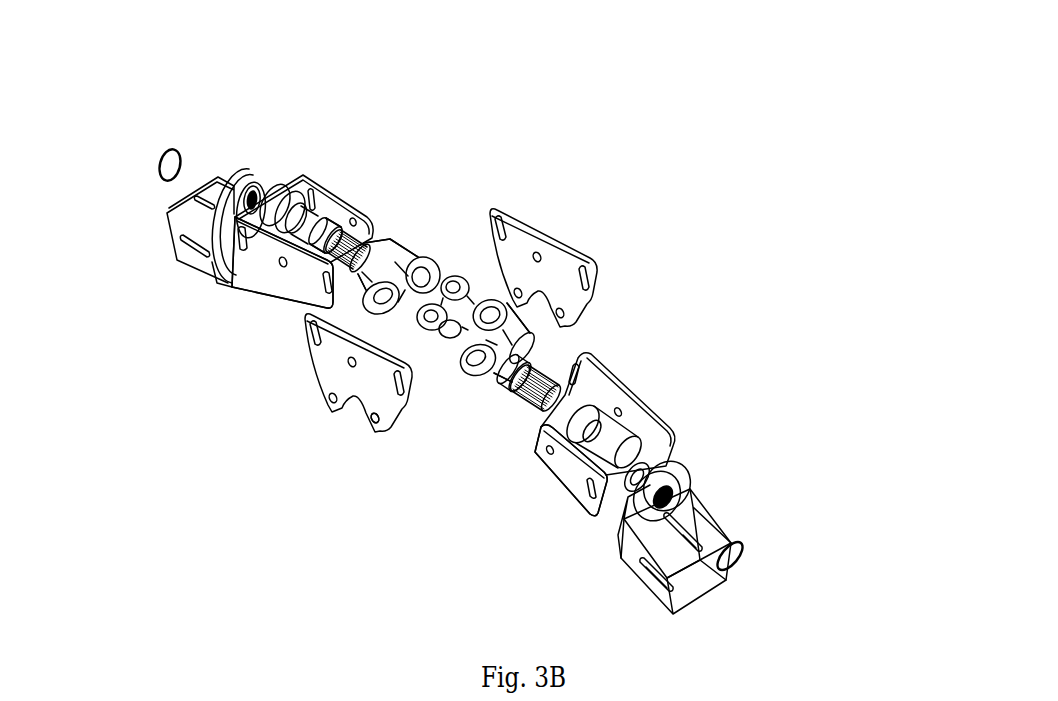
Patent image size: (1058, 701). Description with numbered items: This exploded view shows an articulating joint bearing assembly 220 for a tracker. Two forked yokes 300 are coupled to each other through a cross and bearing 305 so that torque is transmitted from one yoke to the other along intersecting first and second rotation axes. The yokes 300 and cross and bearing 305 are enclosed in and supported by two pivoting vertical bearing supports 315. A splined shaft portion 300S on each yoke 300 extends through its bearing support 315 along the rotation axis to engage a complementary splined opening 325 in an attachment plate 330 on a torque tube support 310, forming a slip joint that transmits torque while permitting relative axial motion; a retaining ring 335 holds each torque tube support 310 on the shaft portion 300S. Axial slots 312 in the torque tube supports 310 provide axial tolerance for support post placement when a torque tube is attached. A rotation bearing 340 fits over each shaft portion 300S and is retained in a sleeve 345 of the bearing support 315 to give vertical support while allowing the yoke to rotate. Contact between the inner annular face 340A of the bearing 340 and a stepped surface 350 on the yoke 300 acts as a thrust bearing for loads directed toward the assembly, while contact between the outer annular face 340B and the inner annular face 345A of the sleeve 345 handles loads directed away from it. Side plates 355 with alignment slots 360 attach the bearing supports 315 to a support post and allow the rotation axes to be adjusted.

The articulating joint bearing assembly 220 is at (690, 245).
The forked yoke 300 is at (388, 258).
The splined shaft portion 300S is at (344, 250).
The cross and bearing 305 is at (460, 275).
The torque tube support 310 is at (187, 267).
The axial slot 312 is at (660, 583).
The pivoting vertical bearing support 315 is at (657, 404).
The splined opening 325 is at (262, 195).
The attachment plate 330 is at (240, 163).
The retaining ring 335 is at (152, 166).
The rotation bearing 340 is at (297, 252).
The inner annular face 340A is at (305, 242).
The outer annular face 340B is at (443, 540).
The sleeve 345 is at (318, 200).
The inner annular face of sleeve 345A is at (285, 215).
The stepped surface 350 is at (507, 380).
The side plate 355 is at (550, 237).
The alignment slot 360 is at (500, 213).